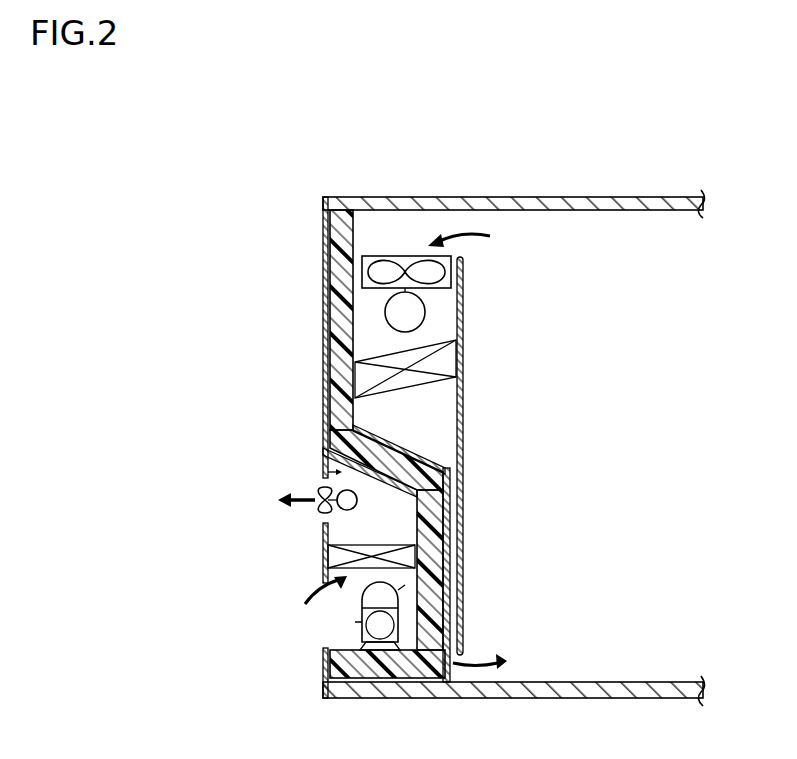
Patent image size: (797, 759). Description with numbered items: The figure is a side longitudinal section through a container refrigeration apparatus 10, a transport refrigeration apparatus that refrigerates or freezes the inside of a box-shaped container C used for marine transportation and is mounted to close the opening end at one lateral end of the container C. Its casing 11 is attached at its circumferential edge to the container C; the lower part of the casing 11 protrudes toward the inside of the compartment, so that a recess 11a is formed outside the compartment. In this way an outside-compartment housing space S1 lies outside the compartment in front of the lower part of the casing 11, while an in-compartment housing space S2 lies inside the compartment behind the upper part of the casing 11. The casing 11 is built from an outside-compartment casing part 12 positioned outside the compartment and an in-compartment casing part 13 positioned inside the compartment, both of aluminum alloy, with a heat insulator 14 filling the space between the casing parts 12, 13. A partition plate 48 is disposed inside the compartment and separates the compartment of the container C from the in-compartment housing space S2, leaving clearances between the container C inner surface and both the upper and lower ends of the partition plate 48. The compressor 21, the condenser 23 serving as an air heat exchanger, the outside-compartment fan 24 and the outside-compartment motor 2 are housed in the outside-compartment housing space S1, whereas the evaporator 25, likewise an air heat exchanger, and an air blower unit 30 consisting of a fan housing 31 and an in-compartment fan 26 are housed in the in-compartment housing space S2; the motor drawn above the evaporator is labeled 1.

The container refrigeration apparatus 10 is at (227, 155).
The casing 11 is at (319, 205).
The recess 11a is at (420, 534).
The outside-compartment casing part 12 is at (332, 362).
The in-compartment casing part 13 is at (447, 487).
The heat insulator 14 is at (422, 452).
The fan motor 1 is at (385, 312).
The outside-compartment motor 2 is at (347, 512).
The compressor 21 is at (362, 620).
The condenser 23 is at (378, 545).
The outside-compartment fan 24 is at (320, 510).
The evaporator 25 is at (436, 380).
The in-compartment fan 26 is at (381, 264).
The air blower unit 30 is at (412, 279).
The fan housing 31 is at (360, 271).
The partition plate 48 is at (463, 407).
The container C is at (598, 194).
The outside-compartment housing space S1 is at (326, 463).
The in-compartment housing space S2 is at (452, 327).